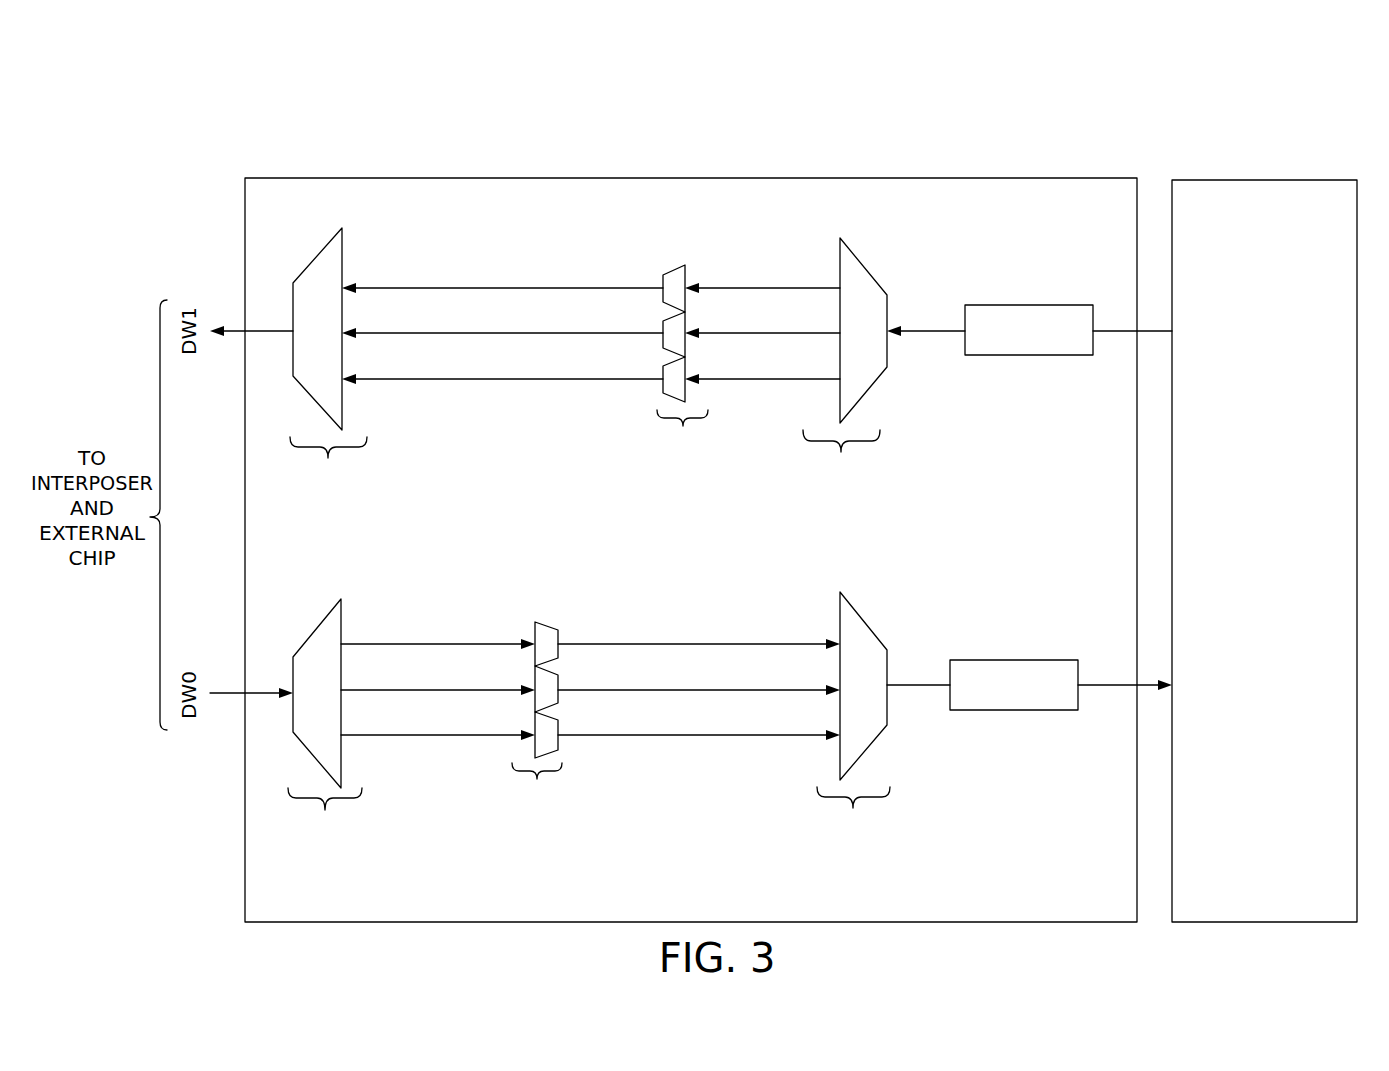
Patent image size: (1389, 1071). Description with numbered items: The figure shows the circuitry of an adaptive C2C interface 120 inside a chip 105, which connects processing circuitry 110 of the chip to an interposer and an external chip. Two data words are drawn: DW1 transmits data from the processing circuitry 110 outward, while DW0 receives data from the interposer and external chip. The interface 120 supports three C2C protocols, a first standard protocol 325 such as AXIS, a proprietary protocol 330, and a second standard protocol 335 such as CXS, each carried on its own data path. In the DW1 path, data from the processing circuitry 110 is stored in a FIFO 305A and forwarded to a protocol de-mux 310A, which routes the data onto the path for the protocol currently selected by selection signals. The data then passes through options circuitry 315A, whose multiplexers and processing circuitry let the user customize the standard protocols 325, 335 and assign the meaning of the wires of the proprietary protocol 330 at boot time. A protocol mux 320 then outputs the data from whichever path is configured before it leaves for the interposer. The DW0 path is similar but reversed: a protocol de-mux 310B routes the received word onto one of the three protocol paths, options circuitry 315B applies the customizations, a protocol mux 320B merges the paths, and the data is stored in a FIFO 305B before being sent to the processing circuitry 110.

The chip 105 is at (1262, 100).
The processing circuitry 110 is at (1288, 584).
The adaptive C2C interface 120 is at (722, 178).
The FIFO 305A is at (1038, 305).
The FIFO 305B is at (1020, 660).
The protocol de-multiplexer 310A is at (842, 386).
The protocol de-multiplexer 310B is at (325, 748).
The options circuitry 315A is at (683, 386).
The options circuitry 315B is at (538, 742).
The protocol mux 320 is at (327, 384).
The protocol mux 320B is at (853, 741).
The first standard protocol 325 is at (622, 643).
The proprietary protocol 330 is at (775, 689).
The second standard protocol 335 is at (483, 380).